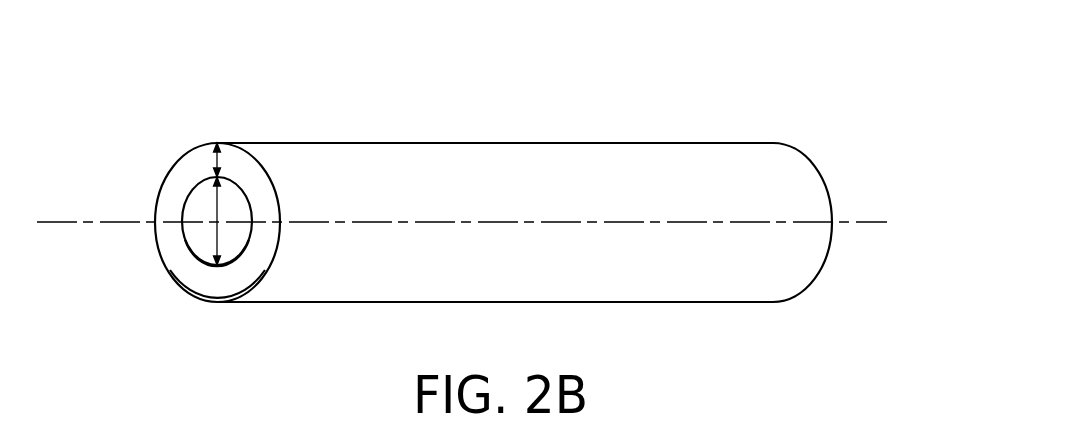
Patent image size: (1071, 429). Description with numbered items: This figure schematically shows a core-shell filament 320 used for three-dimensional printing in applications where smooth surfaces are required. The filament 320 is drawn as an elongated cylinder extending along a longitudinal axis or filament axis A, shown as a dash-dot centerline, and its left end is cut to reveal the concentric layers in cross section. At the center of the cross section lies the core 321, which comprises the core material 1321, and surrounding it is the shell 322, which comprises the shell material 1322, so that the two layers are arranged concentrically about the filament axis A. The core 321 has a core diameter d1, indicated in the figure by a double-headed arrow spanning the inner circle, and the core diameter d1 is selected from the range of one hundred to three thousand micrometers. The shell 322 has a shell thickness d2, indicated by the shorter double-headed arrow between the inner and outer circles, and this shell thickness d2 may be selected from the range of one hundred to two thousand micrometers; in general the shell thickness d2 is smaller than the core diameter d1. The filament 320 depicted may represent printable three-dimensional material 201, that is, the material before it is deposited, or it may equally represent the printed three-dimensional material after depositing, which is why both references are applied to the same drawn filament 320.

The filament 320 is at (776, 91).
The printable 3D material 201 is at (523, 124).
The shell 322 is at (203, 156).
The core 321 is at (203, 245).
The core material 1321 is at (228, 256).
The shell material 1322 is at (251, 273).
The core diameter d1 is at (215, 206).
The shell thickness d2 is at (220, 158).
The longitudinal axis A is at (48, 199).